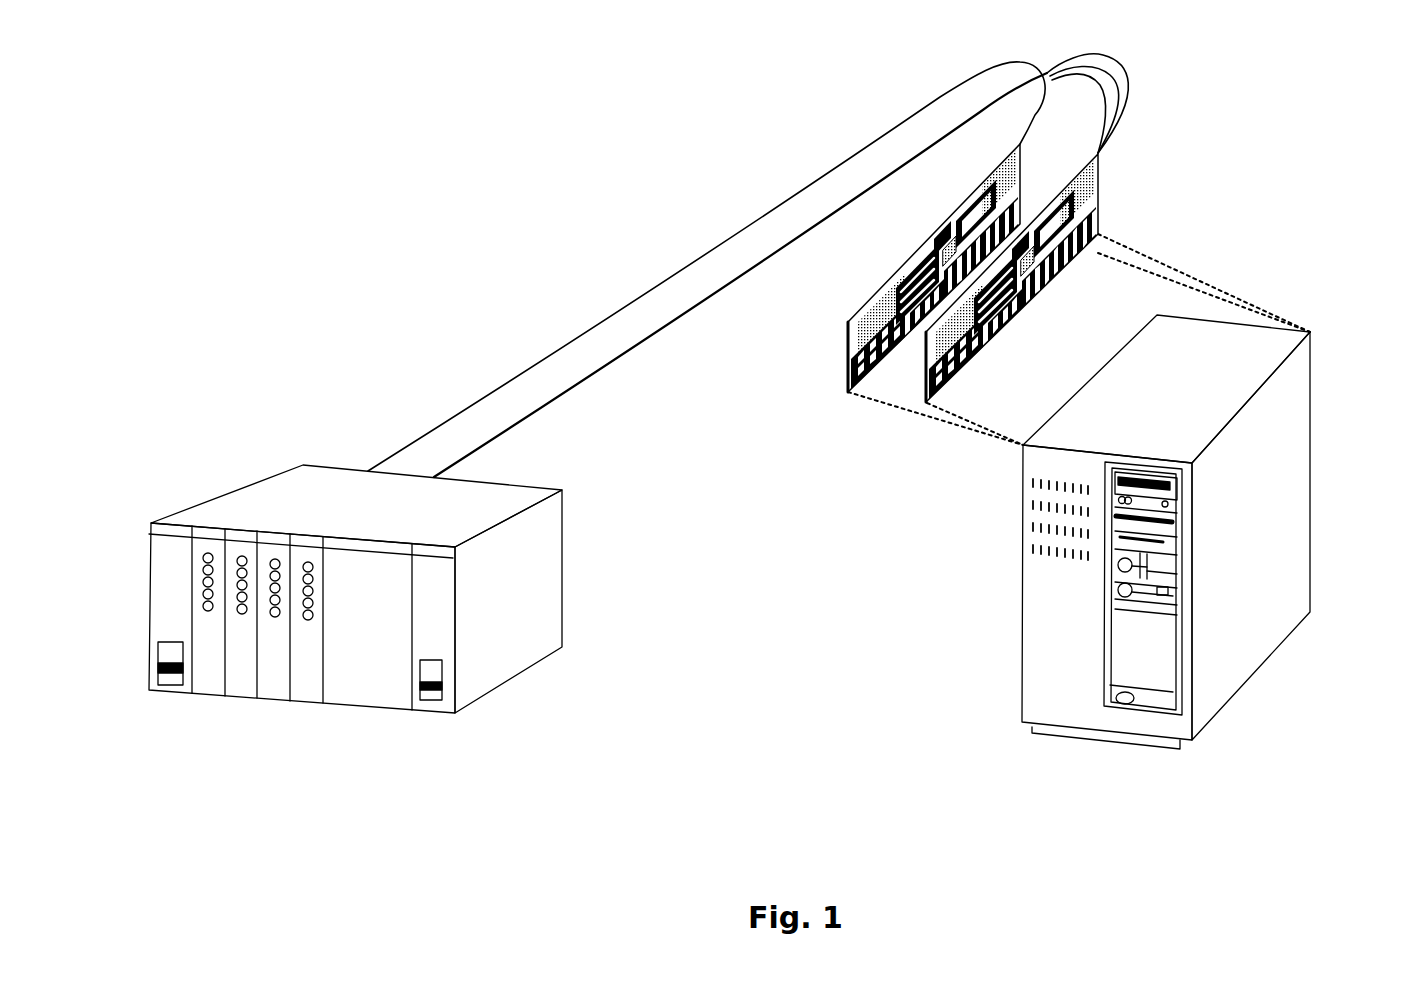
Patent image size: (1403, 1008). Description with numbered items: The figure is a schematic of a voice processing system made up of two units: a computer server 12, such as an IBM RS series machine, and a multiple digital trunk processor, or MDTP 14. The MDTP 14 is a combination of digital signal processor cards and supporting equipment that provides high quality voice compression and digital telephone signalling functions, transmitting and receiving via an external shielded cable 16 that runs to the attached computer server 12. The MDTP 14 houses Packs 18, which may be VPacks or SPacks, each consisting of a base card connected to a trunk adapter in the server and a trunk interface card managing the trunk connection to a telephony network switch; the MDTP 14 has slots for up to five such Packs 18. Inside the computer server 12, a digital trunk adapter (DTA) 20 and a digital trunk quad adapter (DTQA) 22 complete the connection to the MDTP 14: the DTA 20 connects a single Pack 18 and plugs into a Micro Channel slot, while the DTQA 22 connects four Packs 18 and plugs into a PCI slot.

The computer server 12 is at (1315, 475).
The multiple digital trunk processor 14 is at (565, 543).
The cable 16 is at (659, 279).
The Packs 18 is at (210, 685).
The digital trunk adapter 20 is at (846, 357).
The digital trunk quad adapter 22 is at (1098, 190).